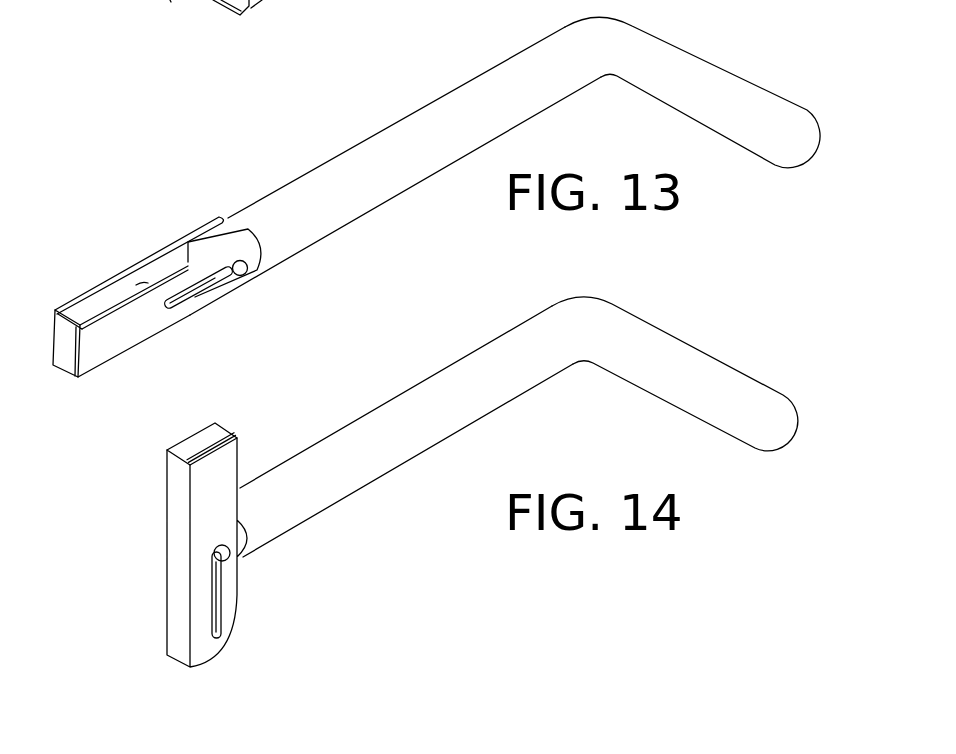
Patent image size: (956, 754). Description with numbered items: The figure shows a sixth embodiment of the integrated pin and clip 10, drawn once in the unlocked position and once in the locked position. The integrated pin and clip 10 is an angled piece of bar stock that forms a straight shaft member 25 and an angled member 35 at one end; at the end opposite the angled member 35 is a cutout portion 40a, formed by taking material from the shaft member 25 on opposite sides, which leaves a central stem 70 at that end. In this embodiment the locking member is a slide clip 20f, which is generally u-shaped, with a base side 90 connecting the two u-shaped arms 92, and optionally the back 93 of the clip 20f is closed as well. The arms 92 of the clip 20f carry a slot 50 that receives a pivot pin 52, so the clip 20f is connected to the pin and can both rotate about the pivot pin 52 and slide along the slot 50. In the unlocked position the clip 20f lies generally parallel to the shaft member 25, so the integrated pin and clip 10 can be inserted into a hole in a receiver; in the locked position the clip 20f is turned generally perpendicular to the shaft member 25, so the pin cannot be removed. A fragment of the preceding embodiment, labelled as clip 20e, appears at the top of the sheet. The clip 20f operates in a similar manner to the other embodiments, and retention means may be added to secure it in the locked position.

In FIG. 13, the integrated pin and clip 10 is at (745, 47).
In FIG. 14, the integrated pin and clip 10 is at (722, 335).
In FIG. 13, the shaft member 25 is at (400, 177).
In FIG. 14, the shaft member 25 is at (432, 435).
In FIG. 13, the angled member 35 is at (730, 133).
In FIG. 14, the angled member 35 is at (707, 420).
In FIG. 13, the tool attachment 20e is at (270, 0).
In FIG. 13, the slide clip 20f is at (160, 291).
In FIG. 14, the slide clip 20f is at (206, 530).
In FIG. 13, the cutout portion 40a is at (252, 230).
In FIG. 13, the slot 50 is at (207, 288).
In FIG. 14, the slot 50 is at (223, 593).
In FIG. 13, the pivot pin 52 is at (245, 272).
In FIG. 14, the pivot pin 52 is at (228, 558).
In FIG. 13, the central stem 70 is at (170, 0).
In FIG. 14, the base side 90 is at (172, 542).
In FIG. 13, the u-shaped arms 92 is at (117, 277).
In FIG. 13, the back 93 is at (62, 358).
In FIG. 14, the back 93 is at (213, 432).